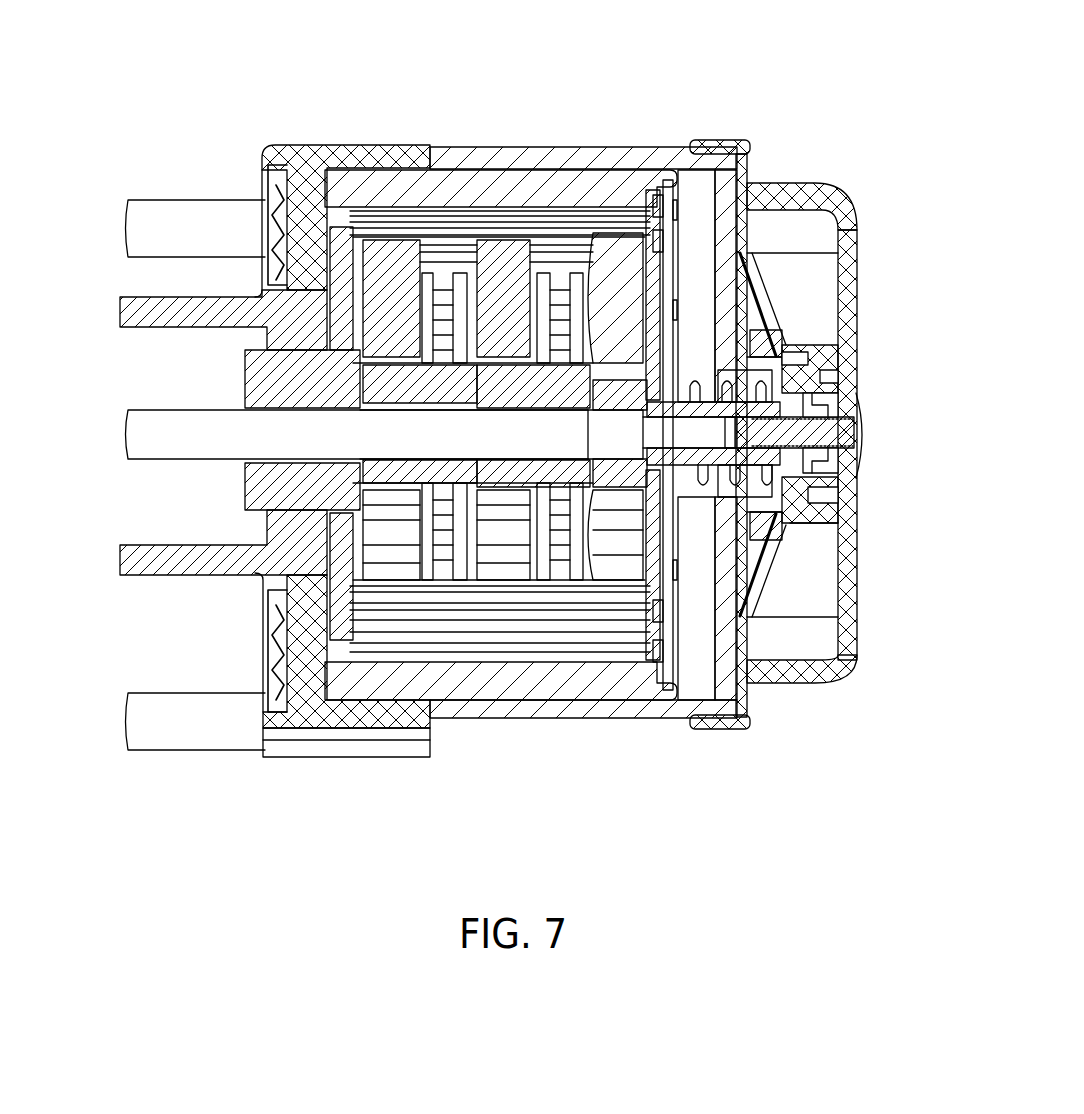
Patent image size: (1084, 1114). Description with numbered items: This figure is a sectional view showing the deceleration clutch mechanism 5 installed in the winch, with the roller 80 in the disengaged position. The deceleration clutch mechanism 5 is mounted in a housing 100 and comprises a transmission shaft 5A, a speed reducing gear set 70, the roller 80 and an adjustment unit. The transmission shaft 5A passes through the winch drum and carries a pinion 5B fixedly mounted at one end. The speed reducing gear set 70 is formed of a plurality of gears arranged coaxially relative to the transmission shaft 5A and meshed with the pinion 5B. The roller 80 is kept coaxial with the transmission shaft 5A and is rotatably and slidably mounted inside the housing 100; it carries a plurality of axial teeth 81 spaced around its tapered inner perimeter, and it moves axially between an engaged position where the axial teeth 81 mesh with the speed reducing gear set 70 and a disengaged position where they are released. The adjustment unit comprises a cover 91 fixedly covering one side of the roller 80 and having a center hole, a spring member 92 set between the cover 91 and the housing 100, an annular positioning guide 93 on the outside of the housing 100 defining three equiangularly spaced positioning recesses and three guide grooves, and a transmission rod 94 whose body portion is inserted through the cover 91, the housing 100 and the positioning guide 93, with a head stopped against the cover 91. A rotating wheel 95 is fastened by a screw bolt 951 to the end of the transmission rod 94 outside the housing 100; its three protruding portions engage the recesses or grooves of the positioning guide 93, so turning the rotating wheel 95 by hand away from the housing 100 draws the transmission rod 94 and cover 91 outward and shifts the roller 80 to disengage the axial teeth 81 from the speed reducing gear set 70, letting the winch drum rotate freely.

The deceleration clutch mechanism 5 is at (486, 78).
The transmission shaft 5A is at (203, 435).
The pinion 5B is at (622, 478).
The speed reducing gear set 70 is at (622, 248).
The roller 80 is at (585, 185).
The axial teeth 81 is at (453, 218).
The cover 91 is at (682, 240).
The spring member 92 is at (775, 517).
The annular positioning guide 93 is at (793, 350).
The transmission rod 94 is at (757, 512).
The rotating wheel 95 is at (825, 205).
The screw bolt 951 is at (815, 440).
The housing 100 is at (522, 160).